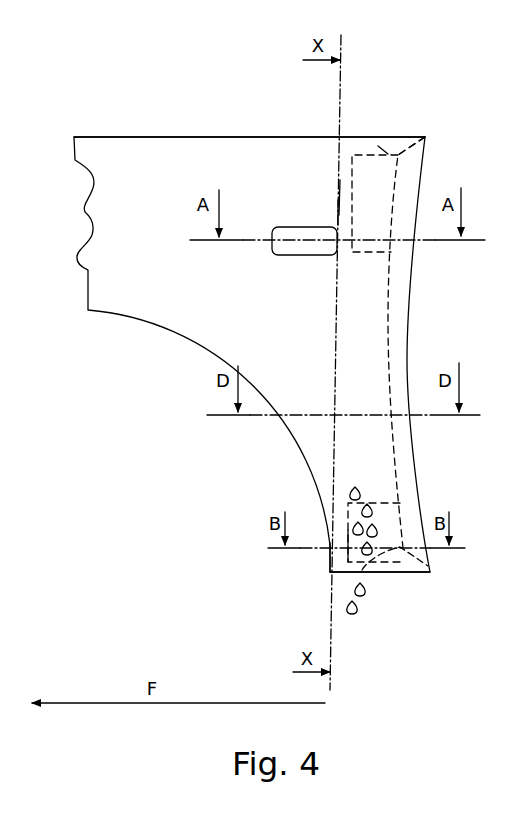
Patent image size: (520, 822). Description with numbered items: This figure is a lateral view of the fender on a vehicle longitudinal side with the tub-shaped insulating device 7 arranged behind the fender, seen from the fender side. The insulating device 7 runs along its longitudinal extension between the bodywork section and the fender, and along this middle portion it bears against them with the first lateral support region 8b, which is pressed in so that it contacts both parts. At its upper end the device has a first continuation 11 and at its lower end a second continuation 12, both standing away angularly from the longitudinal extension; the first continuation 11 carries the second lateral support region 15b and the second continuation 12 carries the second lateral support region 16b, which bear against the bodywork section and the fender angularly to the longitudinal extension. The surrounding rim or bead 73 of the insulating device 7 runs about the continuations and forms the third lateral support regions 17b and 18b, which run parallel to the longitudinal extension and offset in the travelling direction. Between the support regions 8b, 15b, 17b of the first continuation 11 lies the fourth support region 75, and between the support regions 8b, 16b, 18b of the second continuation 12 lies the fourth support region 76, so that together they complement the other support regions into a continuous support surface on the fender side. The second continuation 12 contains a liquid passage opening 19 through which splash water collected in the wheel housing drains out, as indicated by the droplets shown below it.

The insulating device 7 is at (397, 320).
The first lateral support region 8b is at (398, 360).
The first continuation 11 is at (355, 127).
The second continuation 12 is at (350, 580).
The second lateral support region 15b is at (383, 150).
The second lateral support region 16b is at (398, 577).
The third lateral support region 17b is at (345, 188).
The third lateral support region 18b is at (343, 541).
The liquid passage opening 19 is at (370, 573).
The surrounding rim or bead 73 is at (342, 212).
The fourth support region 75 is at (389, 196).
The fourth support region 76 is at (374, 526).